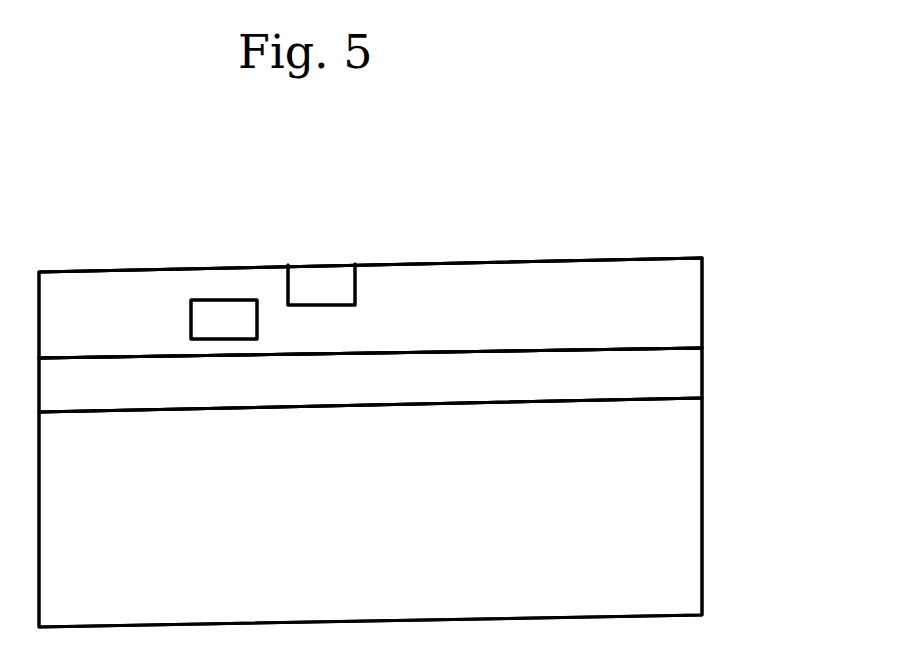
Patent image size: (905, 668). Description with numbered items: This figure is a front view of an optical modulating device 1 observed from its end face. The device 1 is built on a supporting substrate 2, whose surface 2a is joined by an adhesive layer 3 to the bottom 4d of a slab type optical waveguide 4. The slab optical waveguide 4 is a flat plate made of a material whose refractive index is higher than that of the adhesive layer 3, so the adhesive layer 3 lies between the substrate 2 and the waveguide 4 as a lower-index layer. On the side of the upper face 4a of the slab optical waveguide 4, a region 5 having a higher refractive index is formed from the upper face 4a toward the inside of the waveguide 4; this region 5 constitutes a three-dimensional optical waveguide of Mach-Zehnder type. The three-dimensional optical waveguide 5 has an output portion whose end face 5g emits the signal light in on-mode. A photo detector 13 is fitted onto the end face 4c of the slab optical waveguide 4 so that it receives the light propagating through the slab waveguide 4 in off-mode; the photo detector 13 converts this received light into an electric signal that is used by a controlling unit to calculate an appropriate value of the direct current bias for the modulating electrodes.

The optical modulating device 1 is at (404, 380).
The supporting substrate 2 is at (410, 512).
The surface of the substrate 2a is at (578, 398).
The adhesive layer 3 is at (407, 380).
The slab type optical waveguide 4 is at (370, 258).
The surface of the slab optical waveguide 4a is at (370, 218).
The end face of the slab optical waveguide 4c is at (421, 327).
The bottom of the waveguide 4d is at (370, 404).
The three-dimensional optical waveguide 5 is at (262, 253).
The end face of the output portion 5g is at (321, 247).
The photo detector 13 is at (224, 275).